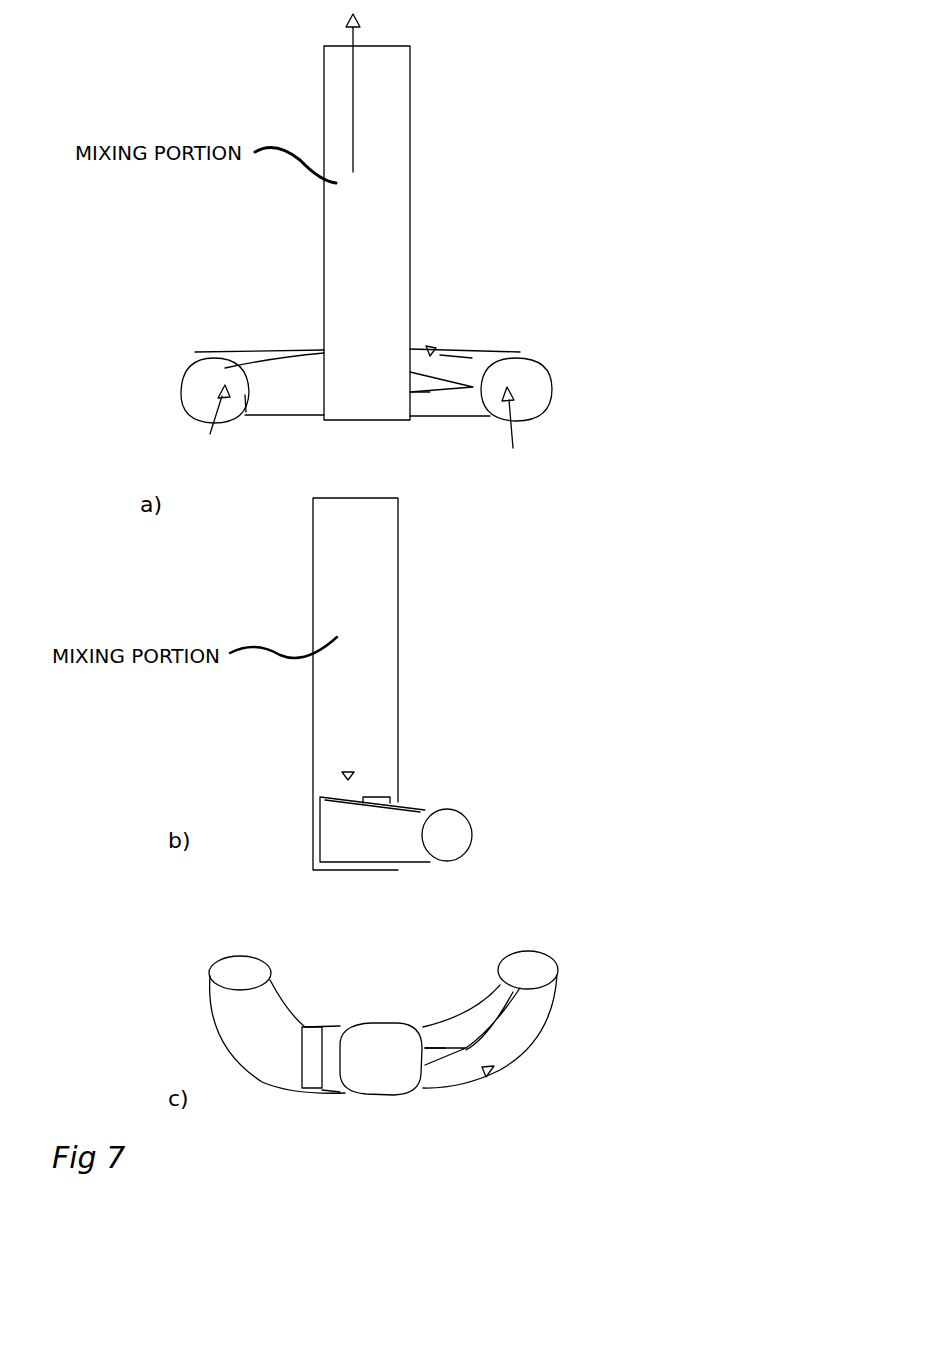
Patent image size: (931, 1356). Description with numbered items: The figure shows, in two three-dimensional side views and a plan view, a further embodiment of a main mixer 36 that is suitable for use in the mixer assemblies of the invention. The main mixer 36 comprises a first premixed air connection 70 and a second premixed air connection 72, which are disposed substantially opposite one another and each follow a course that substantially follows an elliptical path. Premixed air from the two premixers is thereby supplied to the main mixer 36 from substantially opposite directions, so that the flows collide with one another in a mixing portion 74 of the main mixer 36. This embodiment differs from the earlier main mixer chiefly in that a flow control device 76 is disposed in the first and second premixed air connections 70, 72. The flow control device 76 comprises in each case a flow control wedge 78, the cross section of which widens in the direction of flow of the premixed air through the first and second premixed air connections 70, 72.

The main mixer 36 is at (548, 197).
The first premixed air connection 70 is at (200, 357).
The second premixed air connection 72 is at (500, 357).
The mixing portion 74 is at (402, 232).
The flow control device 76 is at (432, 354).
The flow control wedge 78 is at (423, 388).